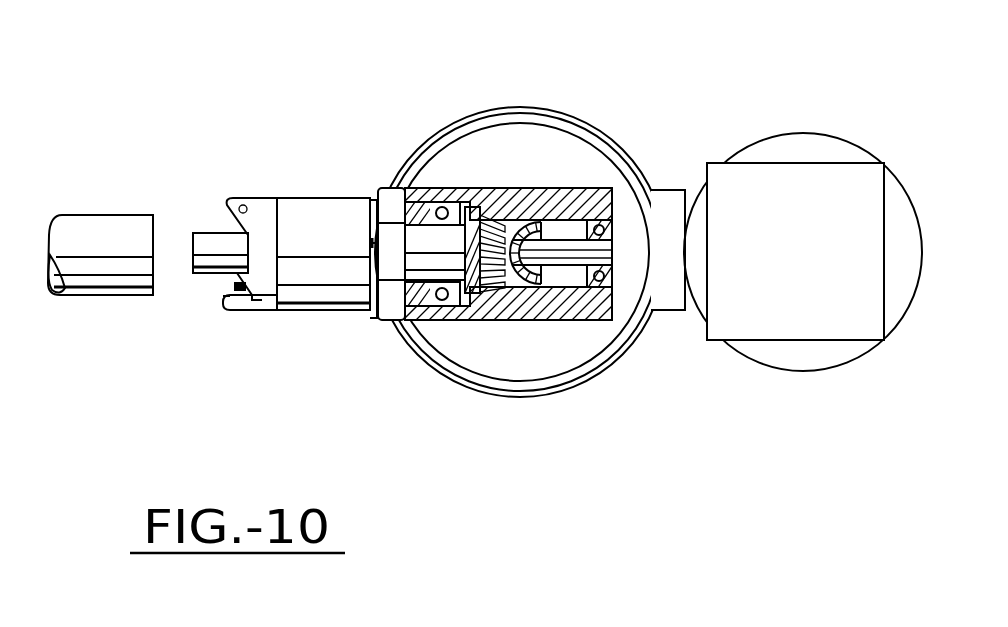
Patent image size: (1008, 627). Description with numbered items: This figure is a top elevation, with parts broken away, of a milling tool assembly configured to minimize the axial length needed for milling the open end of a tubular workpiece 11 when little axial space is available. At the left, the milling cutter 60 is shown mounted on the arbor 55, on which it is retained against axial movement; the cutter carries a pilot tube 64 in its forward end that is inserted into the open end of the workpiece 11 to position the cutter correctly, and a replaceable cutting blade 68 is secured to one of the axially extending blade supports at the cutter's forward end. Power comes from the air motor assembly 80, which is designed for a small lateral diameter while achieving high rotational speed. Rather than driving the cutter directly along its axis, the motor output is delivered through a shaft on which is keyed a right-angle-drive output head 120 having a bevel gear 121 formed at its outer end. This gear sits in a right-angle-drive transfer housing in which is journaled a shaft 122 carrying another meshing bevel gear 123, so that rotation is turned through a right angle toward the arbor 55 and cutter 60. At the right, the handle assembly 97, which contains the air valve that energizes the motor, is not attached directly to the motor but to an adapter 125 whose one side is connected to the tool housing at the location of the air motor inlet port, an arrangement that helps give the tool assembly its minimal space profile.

The tubular workpiece 11 is at (118, 216).
The arbor 55 is at (373, 242).
The milling cutter 60 is at (273, 194).
The pilot tube 64 is at (195, 274).
The cutting blade 68 is at (227, 297).
The air motor assembly 80 is at (574, 106).
The handle assembly 97 is at (803, 132).
The right-angle-drive output head 120 is at (490, 325).
The bevel gear 121 is at (524, 258).
The shaft 122 is at (547, 267).
The meshing bevel gear 123 is at (485, 203).
The adapter 125 is at (813, 322).